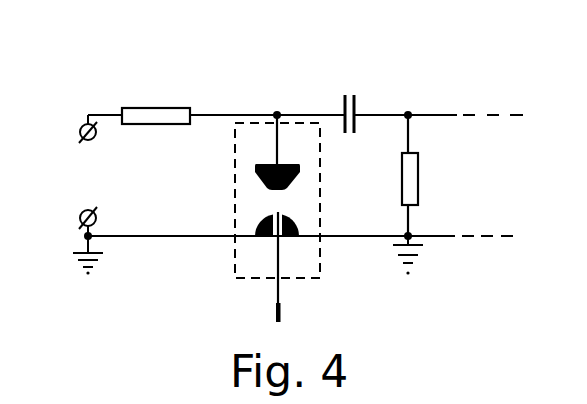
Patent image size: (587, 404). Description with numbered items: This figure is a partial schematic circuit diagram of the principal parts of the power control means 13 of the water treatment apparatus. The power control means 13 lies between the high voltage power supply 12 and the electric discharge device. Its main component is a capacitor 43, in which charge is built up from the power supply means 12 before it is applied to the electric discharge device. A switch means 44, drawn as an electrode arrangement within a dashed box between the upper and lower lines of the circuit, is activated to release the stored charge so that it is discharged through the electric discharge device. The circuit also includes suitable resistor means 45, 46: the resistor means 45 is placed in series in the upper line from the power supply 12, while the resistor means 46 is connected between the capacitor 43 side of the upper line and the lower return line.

The power supply 12 is at (48, 192).
The power control means 13 is at (197, 244).
The capacitor 43 is at (355, 103).
The switch means 44 is at (250, 150).
The resistor means 45 is at (138, 108).
The resistor means 46 is at (418, 180).